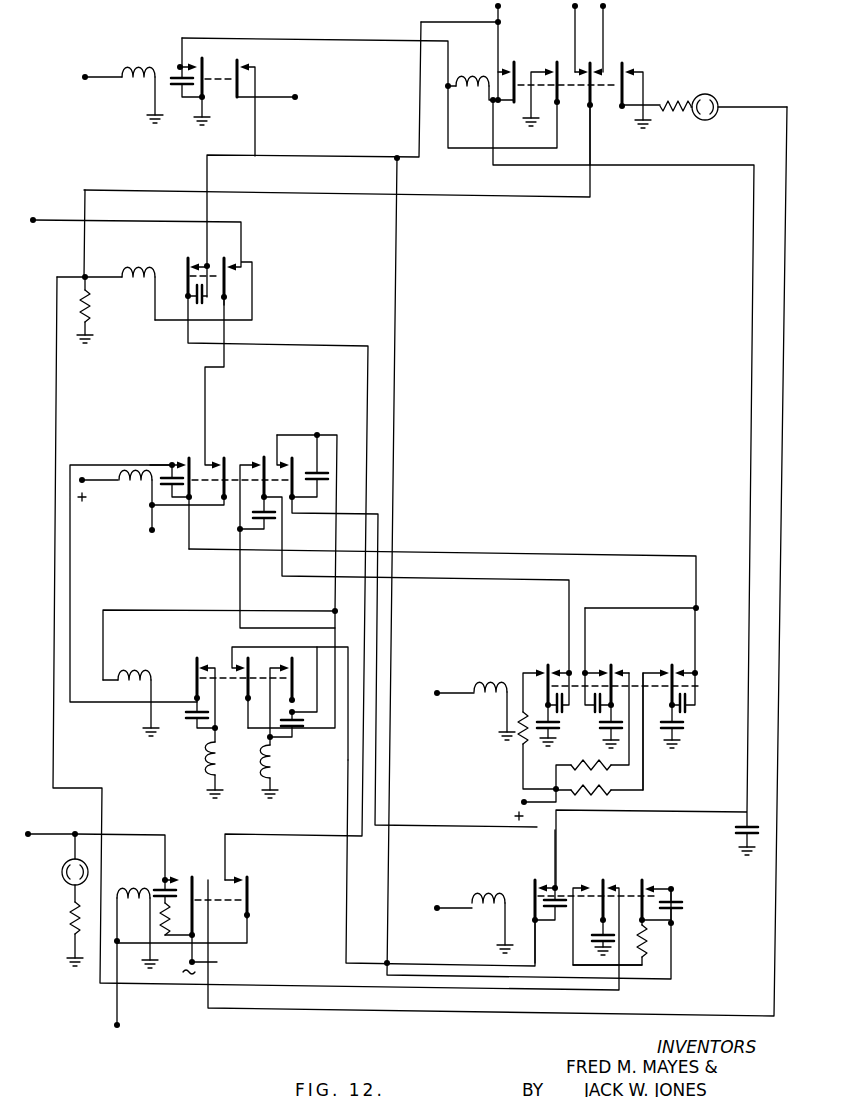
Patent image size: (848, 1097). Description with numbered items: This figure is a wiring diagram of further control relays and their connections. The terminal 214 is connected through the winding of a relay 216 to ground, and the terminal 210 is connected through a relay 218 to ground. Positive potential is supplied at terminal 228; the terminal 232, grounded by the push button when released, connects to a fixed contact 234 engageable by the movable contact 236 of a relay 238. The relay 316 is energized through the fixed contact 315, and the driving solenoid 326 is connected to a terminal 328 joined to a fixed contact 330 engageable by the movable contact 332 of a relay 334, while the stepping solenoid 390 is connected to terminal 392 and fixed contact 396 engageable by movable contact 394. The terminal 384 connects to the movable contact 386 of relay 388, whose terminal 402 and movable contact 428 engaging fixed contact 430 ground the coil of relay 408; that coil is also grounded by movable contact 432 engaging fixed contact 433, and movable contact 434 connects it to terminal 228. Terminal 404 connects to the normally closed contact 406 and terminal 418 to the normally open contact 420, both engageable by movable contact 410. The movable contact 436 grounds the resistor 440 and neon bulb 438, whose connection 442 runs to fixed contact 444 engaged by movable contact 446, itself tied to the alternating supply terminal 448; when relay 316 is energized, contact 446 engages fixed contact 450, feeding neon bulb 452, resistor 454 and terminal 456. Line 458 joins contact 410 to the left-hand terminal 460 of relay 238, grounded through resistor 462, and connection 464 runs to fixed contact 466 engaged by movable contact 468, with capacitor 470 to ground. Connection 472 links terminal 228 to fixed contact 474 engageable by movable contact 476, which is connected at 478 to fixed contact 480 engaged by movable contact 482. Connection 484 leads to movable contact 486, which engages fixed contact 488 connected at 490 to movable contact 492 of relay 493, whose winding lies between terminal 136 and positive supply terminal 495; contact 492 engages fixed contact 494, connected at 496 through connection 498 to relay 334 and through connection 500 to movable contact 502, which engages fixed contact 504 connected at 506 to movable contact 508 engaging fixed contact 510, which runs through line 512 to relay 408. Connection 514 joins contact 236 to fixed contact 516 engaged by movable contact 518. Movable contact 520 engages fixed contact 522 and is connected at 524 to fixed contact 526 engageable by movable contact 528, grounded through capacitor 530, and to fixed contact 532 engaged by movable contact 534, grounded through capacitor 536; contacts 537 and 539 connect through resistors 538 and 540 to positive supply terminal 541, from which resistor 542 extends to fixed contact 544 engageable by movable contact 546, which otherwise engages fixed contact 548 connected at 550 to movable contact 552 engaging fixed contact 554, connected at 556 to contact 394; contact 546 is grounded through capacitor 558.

The terminal 402 is at (85, 79).
The relay 388 is at (132, 70).
The fixed contact 430 is at (190, 62).
The movable contact 428 is at (207, 62).
The movable contact 386 is at (233, 90).
The terminal 384 is at (295, 95).
The connection 472 is at (418, 102).
The terminal 232 is at (33, 218).
The left-hand terminal 460 is at (87, 276).
The relay 238 is at (142, 272).
The resistor 462 is at (92, 305).
The fixed contact 474 is at (193, 262).
The movable contact 476 is at (187, 283).
The fixed contact 234 is at (237, 273).
The movable contact 236 is at (224, 298).
The connection 478 is at (347, 346).
The connection 484 is at (396, 284).
The line 458 is at (441, 198).
The line 512 is at (617, 166).
The terminal 228 is at (497, 6).
The movable contact 434 is at (504, 68).
The fixed contact 433 is at (540, 63).
The relay 408 is at (477, 80).
The movable contact 432 is at (548, 90).
The terminal 418 is at (574, 8).
The normally open contact 420 is at (578, 70).
The terminal 404 is at (604, 8).
The movable contact 410 is at (586, 96).
The contact 406 is at (607, 133).
The movable contact 436 is at (622, 92).
The resistor 440 is at (683, 115).
The neon bulb 438 is at (714, 97).
The connection 442 is at (426, 1012).
The connection 464 is at (56, 406).
The connection 514 is at (207, 410).
The fixed contact 516 is at (217, 462).
The movable contact 520 is at (185, 460).
The fixed contact 522 is at (177, 460).
The movable contact 518 is at (258, 466).
The fixed contact 554 is at (256, 462).
The movable contact 552 is at (262, 485).
The connection 556 is at (243, 600).
The connection 498 is at (178, 611).
The relay 334 is at (134, 676).
The connection 500 is at (337, 626).
The fixed contact 504 is at (234, 650).
The connection 506 is at (347, 894).
The movable contact 332 is at (194, 668).
The fixed contact 330 is at (212, 665).
The movable contact 502 is at (245, 686).
The terminal 328 is at (216, 730).
The driving solenoid 326 is at (222, 760).
The fixed contact 396 is at (283, 665).
The movable contact 394 is at (296, 686).
The terminal 392 is at (272, 740).
The stepping solenoid 390 is at (268, 790).
The positive potential supply terminal 495 is at (82, 478).
The relay 493 is at (128, 476).
The terminal 136 is at (150, 533).
The fixed contact 494 is at (279, 460).
The movable contact 492 is at (293, 470).
The connection 496 is at (349, 436).
The connection 490 is at (306, 513).
The connection 524 is at (537, 554).
The connection 550 is at (537, 578).
The terminal 214 is at (437, 690).
The relay 216 is at (492, 686).
The fixed contact 544 is at (527, 668).
The movable contact 546 is at (540, 650).
The fixed contact 548 is at (549, 677).
The capacitor 558 is at (565, 725).
The resistor 542 is at (522, 750).
The positive supply terminal 541 is at (522, 801).
The resistor 538 is at (600, 796).
The resistor 540 is at (598, 770).
The capacitor 536 is at (591, 730).
The fixed contact 532 is at (596, 668).
The movable contact 534 is at (617, 670).
The contact 537 is at (657, 665).
The contact 539 is at (632, 660).
The fixed contact 526 is at (675, 665).
The movable contact 528 is at (675, 690).
The capacitor 530 is at (673, 739).
The terminal 456 is at (28, 832).
The fixed contact 450 is at (176, 842).
The neon bulb 452 is at (62, 880).
The resistor 454 is at (70, 928).
The relay 316 is at (133, 893).
The fixed contact 315 is at (119, 1026).
The fixed contact 444 is at (178, 876).
The movable contact 446 is at (193, 905).
The fixed contact 480 is at (232, 878).
The movable contact 482 is at (250, 888).
The alternating supply terminal 448 is at (218, 955).
The terminal 210 is at (437, 905).
The relay 218 is at (490, 898).
The movable contact 508 is at (527, 882).
The fixed contact 510 is at (543, 887).
The capacitor 470 is at (592, 940).
The fixed contact 466 is at (604, 878).
The movable contact 468 is at (603, 905).
The fixed contact 488 is at (652, 883).
The movable contact 486 is at (675, 915).